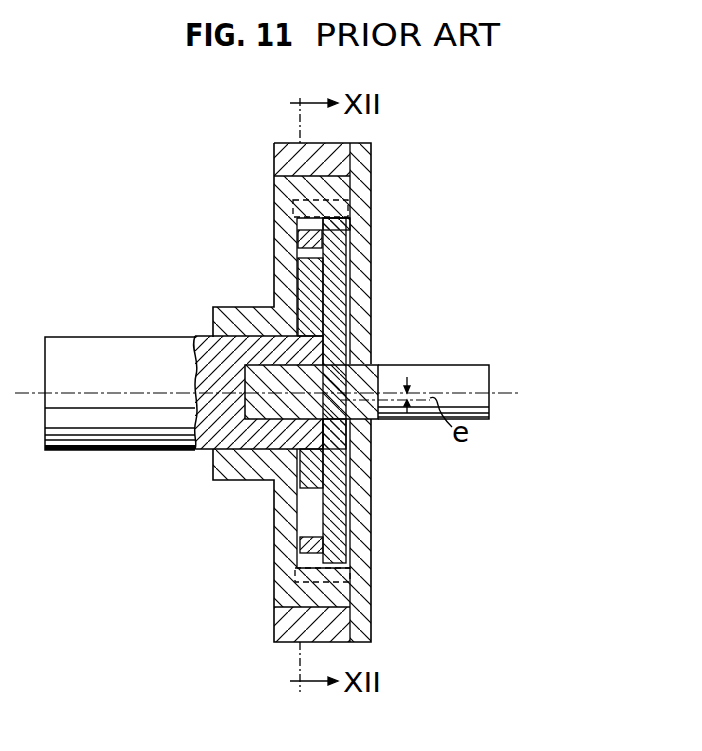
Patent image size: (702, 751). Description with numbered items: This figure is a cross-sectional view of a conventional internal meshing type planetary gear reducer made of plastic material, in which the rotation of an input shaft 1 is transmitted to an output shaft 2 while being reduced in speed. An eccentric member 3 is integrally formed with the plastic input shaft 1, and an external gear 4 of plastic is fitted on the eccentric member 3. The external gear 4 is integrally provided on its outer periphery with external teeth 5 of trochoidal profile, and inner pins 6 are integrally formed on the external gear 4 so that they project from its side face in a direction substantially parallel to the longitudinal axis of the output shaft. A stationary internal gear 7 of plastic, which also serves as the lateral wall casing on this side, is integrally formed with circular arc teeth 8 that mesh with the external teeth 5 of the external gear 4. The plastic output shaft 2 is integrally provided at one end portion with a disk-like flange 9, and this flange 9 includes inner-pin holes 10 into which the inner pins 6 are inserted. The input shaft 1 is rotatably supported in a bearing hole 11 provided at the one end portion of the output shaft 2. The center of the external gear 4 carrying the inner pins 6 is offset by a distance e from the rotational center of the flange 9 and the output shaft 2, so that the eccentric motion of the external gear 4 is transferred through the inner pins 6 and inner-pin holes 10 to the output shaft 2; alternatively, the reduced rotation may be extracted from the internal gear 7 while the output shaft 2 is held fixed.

The input shaft 1 is at (452, 376).
The output shaft 2 is at (88, 440).
The eccentric member 3 is at (338, 433).
The external gear 4 is at (337, 295).
The external teeth 5 is at (335, 224).
The inner pins 6 is at (308, 271).
The internal gear 7 is at (288, 190).
The circular arc teeth 8 is at (340, 210).
The flange 9 is at (314, 465).
The inner-pin holes 10 is at (300, 241).
The bearing hole 11 is at (250, 380).